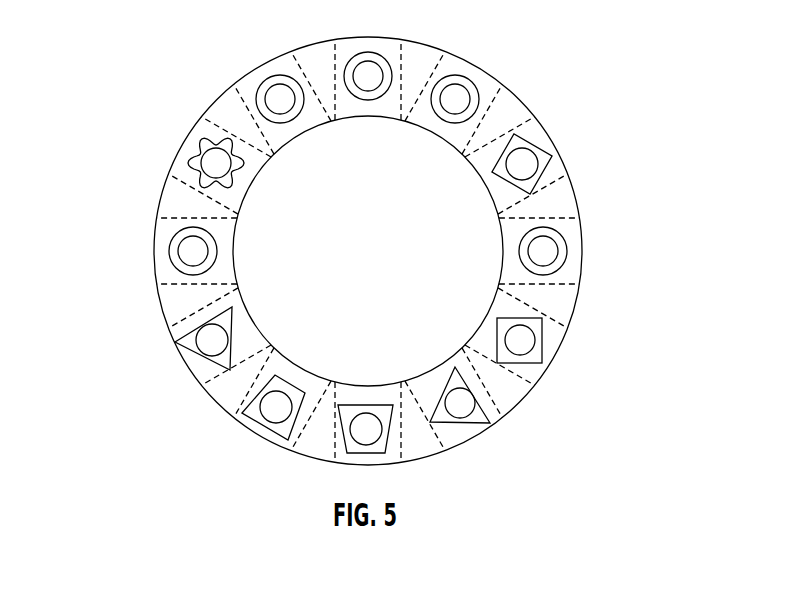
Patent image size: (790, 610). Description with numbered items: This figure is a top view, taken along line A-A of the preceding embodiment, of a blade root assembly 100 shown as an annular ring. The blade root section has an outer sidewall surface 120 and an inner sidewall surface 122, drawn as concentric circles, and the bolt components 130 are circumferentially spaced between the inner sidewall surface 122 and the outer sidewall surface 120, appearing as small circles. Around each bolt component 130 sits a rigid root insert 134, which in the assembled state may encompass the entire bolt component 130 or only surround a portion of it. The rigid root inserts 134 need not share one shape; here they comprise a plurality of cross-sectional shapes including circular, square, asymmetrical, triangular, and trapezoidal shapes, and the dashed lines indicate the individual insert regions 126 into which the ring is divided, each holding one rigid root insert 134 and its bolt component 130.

The cutting tool assembly 100 is at (572, 98).
The outer sidewall surface 120 is at (563, 340).
The inner sidewall surface 122 is at (497, 300).
The insert receiving recess 126 is at (393, 43).
The bolt component 130 is at (192, 335).
The rigid root insert 134 is at (348, 62).